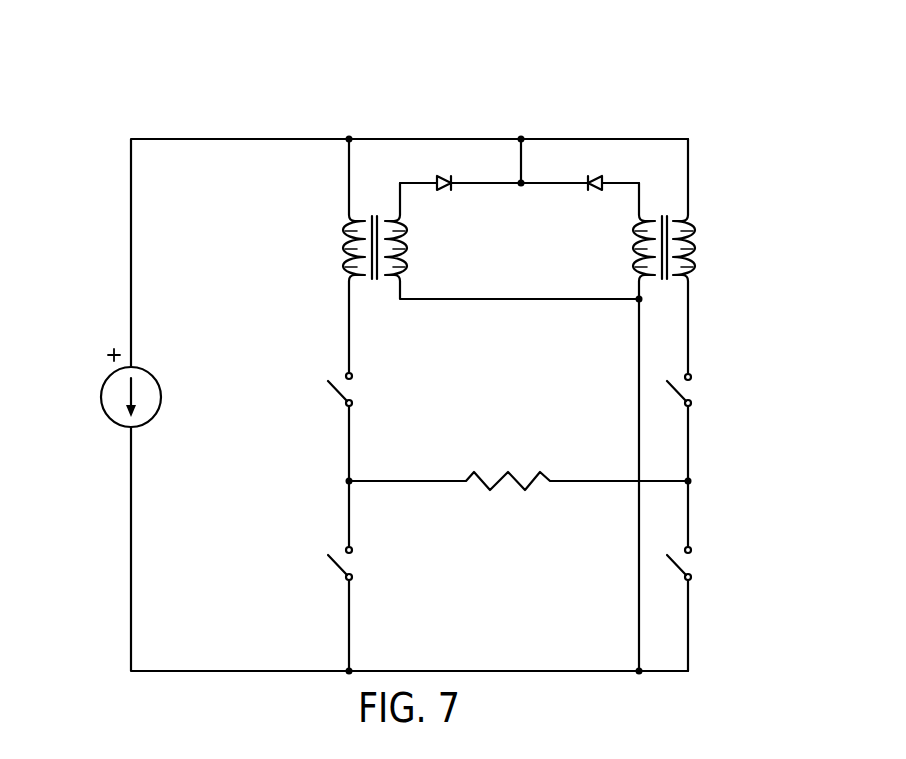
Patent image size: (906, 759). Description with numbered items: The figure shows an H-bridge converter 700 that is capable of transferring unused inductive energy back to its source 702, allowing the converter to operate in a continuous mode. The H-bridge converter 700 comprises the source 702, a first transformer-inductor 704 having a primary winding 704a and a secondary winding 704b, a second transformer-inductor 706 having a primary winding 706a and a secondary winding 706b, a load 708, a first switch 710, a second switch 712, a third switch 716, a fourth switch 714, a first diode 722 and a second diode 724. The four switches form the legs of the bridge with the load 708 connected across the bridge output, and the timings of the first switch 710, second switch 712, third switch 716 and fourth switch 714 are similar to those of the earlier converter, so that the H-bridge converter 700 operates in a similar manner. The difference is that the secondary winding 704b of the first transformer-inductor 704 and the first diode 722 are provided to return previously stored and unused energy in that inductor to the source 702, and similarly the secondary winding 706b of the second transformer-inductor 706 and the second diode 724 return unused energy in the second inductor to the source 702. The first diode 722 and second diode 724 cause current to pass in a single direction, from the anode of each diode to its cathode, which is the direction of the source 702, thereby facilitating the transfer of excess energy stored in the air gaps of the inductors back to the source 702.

The H-bridge converter 700 is at (642, 42).
The source U1 702 is at (109, 418).
The transformer-inductor L1 704 is at (370, 187).
The transformer-inductor L1 primary winding 704a is at (349, 234).
The transformer-inductor L1 secondary winding 704b is at (393, 277).
The transformer-inductor L2 706 is at (660, 187).
The transformer-inductor L2 primary winding 706a is at (690, 234).
The transformer-inductor L2 secondary winding 706b is at (643, 277).
The load R1 708 is at (517, 485).
The switch S1 710 is at (334, 388).
The switch S2 712 is at (334, 562).
The switch S4 714 is at (670, 392).
The switch S3 716 is at (670, 566).
The diode D1 722 is at (441, 192).
The diode D2 724 is at (596, 192).